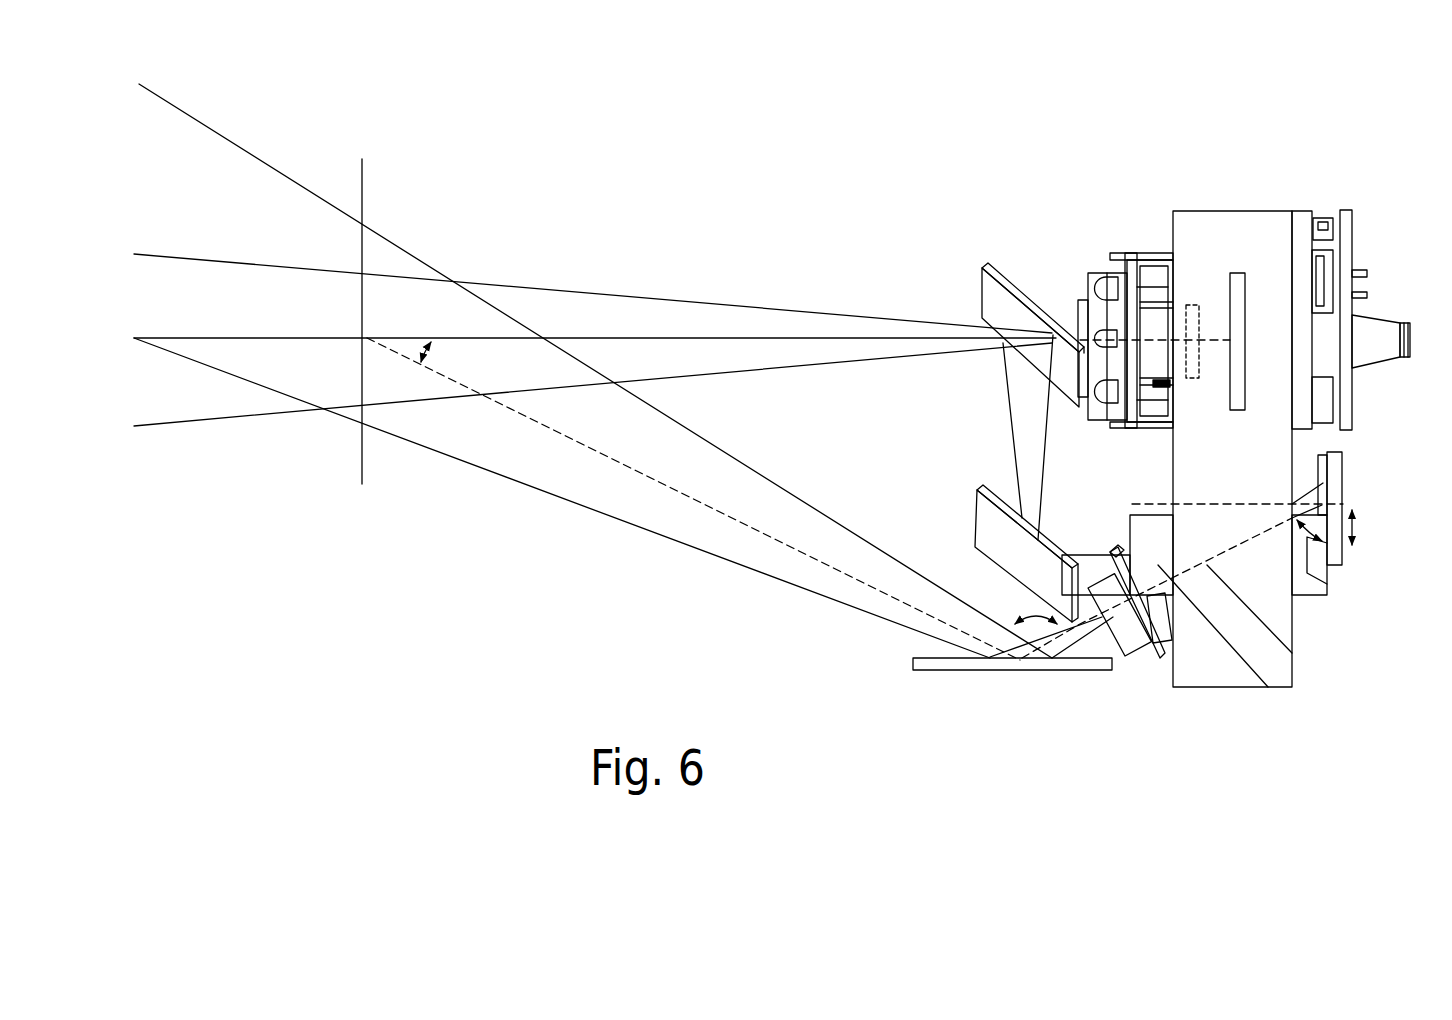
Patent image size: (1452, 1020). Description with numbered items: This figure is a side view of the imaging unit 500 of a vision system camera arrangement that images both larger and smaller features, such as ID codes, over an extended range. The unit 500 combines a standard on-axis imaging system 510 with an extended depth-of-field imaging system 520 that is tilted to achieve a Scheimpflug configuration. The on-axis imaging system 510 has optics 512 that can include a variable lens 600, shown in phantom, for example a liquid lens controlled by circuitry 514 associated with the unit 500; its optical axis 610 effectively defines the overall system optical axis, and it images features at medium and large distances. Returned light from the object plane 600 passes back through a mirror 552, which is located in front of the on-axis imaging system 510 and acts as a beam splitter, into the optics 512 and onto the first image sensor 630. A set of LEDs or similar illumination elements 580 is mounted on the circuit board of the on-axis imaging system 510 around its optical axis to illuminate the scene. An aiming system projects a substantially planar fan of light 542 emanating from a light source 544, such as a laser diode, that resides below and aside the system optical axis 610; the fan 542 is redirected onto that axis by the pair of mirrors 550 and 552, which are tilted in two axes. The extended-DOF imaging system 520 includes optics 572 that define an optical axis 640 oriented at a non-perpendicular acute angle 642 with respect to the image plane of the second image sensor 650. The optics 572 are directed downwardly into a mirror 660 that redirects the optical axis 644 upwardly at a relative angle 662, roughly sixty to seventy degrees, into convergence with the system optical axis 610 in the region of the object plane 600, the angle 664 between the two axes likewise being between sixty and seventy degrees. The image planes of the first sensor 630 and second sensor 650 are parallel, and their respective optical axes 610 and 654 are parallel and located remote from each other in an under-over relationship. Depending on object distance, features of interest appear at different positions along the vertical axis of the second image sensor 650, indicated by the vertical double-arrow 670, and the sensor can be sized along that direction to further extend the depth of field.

The imaging unit 500 is at (1178, 197).
The on-axis imaging system 510 is at (1118, 240).
The optics 512 is at (1090, 276).
The circuitry 514 is at (1354, 236).
The extended DOF imaging system 520 is at (1141, 668).
The planar fan of light 542 is at (1082, 553).
The light source 544 is at (1268, 687).
The mirror 550 is at (978, 522).
The mirror 552 is at (1029, 307).
The optics 572 is at (1165, 662).
The illumination elements 580 is at (1105, 276).
The variable lens / object plane 600 is at (360, 475).
The system optical axis 610 is at (421, 336).
The first image sensor 630 is at (1245, 287).
The optical axis 640 is at (1292, 653).
The acute angle 642 is at (1328, 586).
The optical axis 644 is at (444, 378).
The second image sensor 650 is at (1343, 490).
The optical axis 654 is at (1200, 503).
The mirror 660 is at (940, 671).
The relative angle 662 is at (1022, 588).
The angle 664 is at (426, 357).
The vertical double-arrow 670 is at (1352, 527).